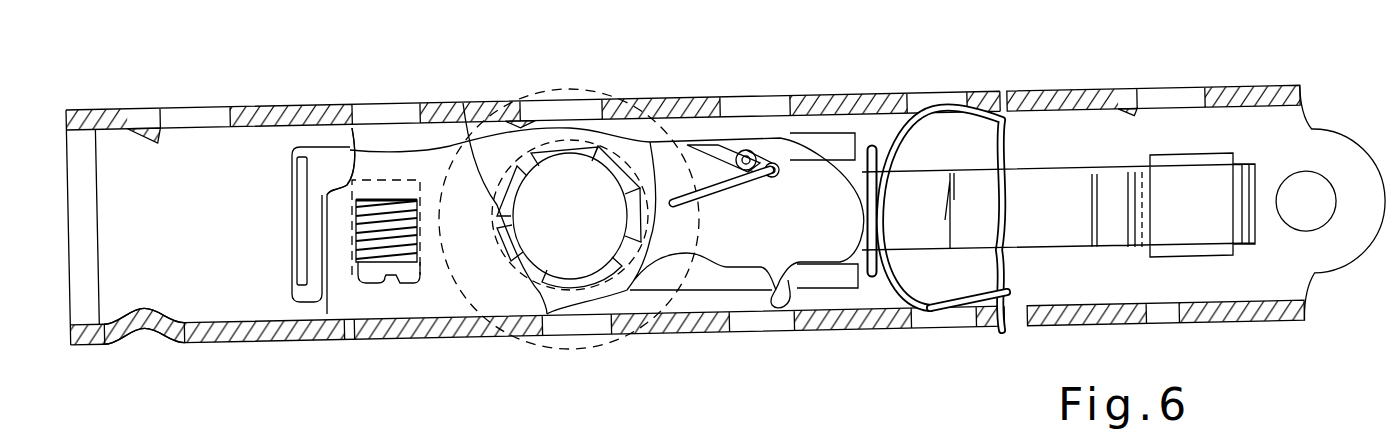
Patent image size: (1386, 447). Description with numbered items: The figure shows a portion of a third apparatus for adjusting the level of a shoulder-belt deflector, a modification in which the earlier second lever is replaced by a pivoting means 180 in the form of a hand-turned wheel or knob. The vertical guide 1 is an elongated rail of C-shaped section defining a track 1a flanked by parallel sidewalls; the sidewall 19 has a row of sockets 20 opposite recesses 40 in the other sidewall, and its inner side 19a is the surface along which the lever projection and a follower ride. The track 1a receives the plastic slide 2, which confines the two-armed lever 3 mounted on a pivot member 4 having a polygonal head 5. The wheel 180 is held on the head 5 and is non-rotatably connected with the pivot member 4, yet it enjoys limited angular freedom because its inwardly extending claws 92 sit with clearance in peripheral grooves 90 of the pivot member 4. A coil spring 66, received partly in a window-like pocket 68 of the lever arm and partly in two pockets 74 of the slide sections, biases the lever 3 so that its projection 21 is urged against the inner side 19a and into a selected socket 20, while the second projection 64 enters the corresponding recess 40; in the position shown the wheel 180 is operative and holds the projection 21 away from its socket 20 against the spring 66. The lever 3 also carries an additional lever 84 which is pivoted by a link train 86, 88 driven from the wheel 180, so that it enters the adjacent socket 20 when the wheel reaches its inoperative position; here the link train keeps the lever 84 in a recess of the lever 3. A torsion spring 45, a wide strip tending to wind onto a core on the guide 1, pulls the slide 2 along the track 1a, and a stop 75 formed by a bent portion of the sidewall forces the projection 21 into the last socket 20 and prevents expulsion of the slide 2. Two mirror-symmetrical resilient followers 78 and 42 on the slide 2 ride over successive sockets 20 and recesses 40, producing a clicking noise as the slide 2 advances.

The guide 1 is at (206, 338).
The track 1a is at (204, 240).
The slide 2 is at (320, 290).
The lever 3 is at (386, 173).
The pivot member 4 is at (573, 256).
The polygonal head 5 is at (522, 300).
The sidewall 19 is at (1072, 116).
The inner side of sidewall 19a is at (1240, 131).
The sockets 20 is at (1172, 116).
The projection 21 is at (346, 96).
The recesses 40 is at (1180, 333).
The follower 42 is at (946, 312).
The torsion spring 45 is at (1185, 216).
The second projection 64 is at (783, 298).
The coil spring 66 is at (403, 262).
The window-like pocket 68 is at (346, 274).
The pockets 74 is at (372, 288).
The stop 75 is at (142, 323).
The follower 78 is at (935, 108).
The additional lever 84 is at (718, 145).
The link train 86 is at (775, 162).
The link train 88 is at (736, 183).
The peripheral grooves 90 is at (633, 168).
The claws 92 is at (491, 300).
The pivoting means 180 is at (562, 90).